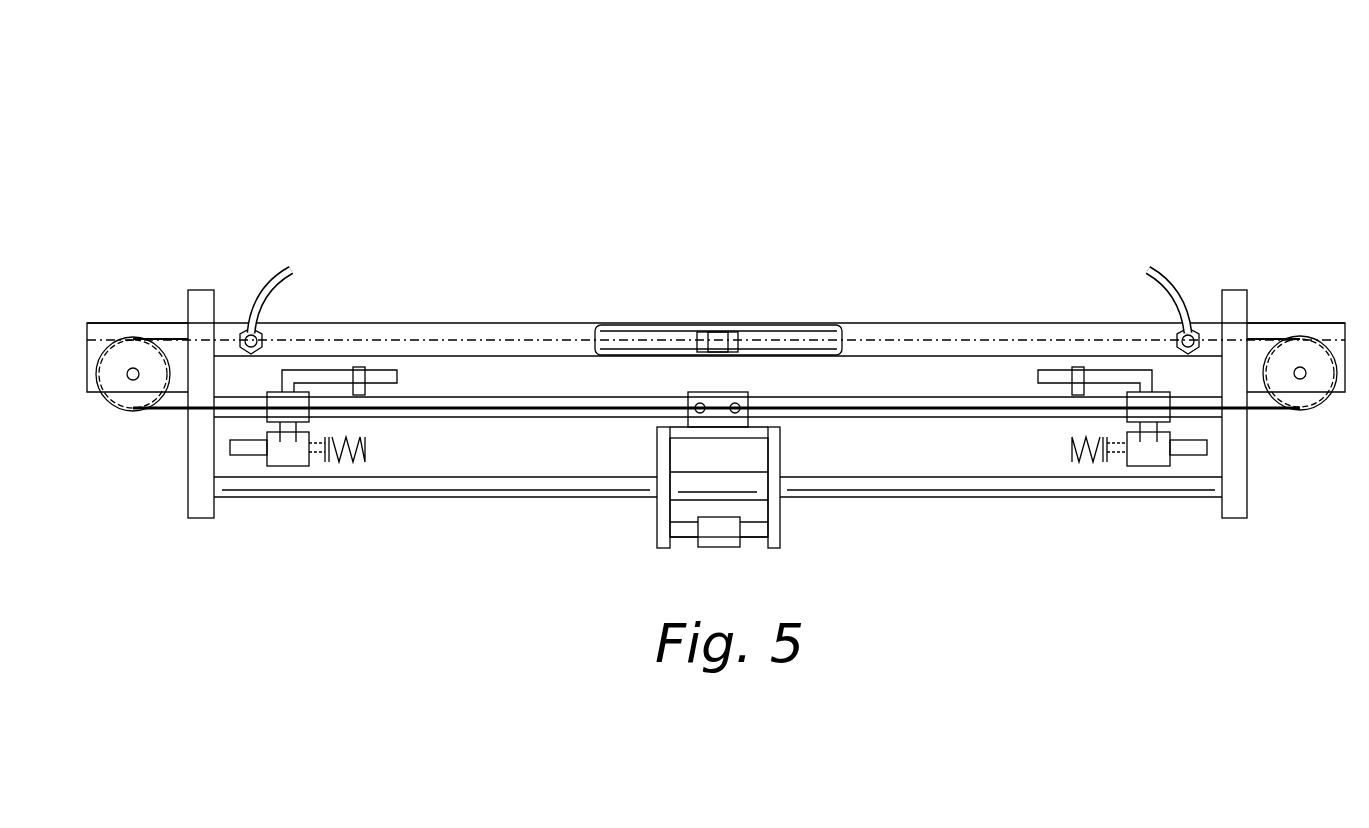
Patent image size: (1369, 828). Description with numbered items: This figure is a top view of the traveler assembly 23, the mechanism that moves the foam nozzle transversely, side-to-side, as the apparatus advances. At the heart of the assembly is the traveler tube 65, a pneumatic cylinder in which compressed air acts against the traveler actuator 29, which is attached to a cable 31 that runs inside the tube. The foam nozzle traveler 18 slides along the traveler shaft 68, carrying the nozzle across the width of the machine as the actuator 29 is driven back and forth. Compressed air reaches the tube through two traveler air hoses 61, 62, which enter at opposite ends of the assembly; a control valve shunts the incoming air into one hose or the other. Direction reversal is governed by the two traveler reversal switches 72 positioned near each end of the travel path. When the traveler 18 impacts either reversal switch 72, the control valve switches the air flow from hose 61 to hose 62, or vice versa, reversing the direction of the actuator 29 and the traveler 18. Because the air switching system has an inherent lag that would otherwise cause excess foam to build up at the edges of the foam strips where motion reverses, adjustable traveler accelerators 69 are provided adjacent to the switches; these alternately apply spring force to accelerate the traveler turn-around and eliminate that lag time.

The traveler assembly 23 is at (716, 198).
The traveler tube 65 is at (455, 323).
The traveler shaft 68 is at (487, 398).
The cable 31 is at (175, 410).
The traveler actuator 29 is at (718, 330).
The traveler air hose 62 is at (263, 296).
The traveler air hose 61 is at (1173, 284).
The foam nozzle traveler 18 is at (718, 392).
The adjustable traveler accelerator 69 is at (1072, 455).
The traveler reversal switch 72 is at (367, 388).